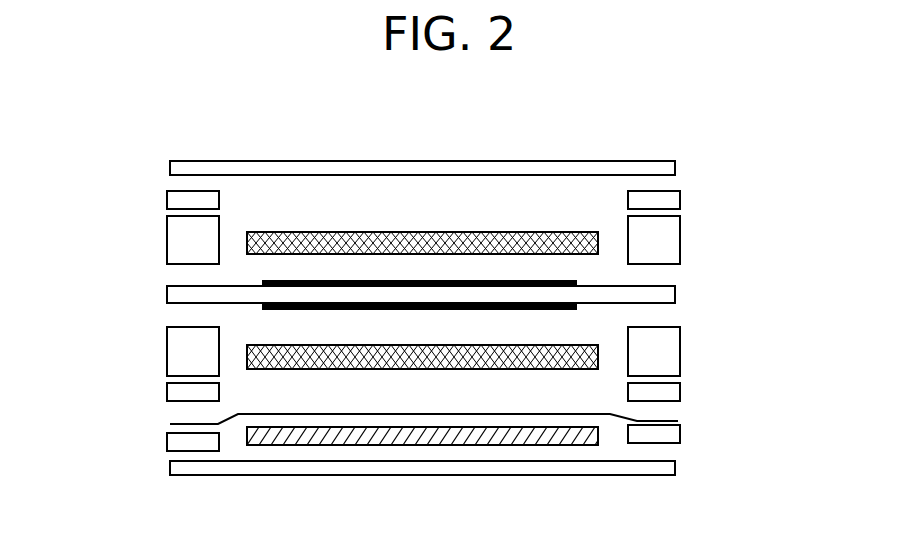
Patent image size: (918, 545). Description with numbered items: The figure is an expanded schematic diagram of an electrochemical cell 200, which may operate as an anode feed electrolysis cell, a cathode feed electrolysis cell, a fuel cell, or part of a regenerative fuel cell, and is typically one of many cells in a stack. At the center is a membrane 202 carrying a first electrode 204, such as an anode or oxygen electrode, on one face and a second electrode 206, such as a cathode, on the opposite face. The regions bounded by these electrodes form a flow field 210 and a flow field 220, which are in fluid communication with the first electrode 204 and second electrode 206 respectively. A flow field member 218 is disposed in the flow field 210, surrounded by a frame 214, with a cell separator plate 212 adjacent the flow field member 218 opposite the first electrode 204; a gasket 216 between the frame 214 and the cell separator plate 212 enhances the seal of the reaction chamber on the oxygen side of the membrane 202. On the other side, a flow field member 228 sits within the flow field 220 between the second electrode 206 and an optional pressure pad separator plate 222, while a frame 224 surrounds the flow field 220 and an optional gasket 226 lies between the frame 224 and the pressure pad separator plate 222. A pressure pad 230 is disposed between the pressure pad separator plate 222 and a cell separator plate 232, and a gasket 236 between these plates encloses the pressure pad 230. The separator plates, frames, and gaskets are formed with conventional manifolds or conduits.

The electrochemical cell 200 is at (188, 115).
The membrane 202 is at (677, 293).
The first electrode 204 is at (290, 281).
The second electrode 206 is at (290, 307).
The flow field 210 is at (460, 216).
The cell separator plate 212 is at (677, 166).
The frame 214 is at (680, 238).
The gasket 216 is at (167, 198).
The flow field member 218 is at (528, 231).
The flow field 220 is at (460, 403).
The pressure pad separator plate 222 is at (663, 420).
The frame 224 is at (680, 348).
The gasket 226 is at (167, 390).
The flow field member 228 is at (560, 345).
The pressure pad 230 is at (600, 435).
The cell separator plate 232 is at (677, 468).
The gasket 236 is at (167, 440).